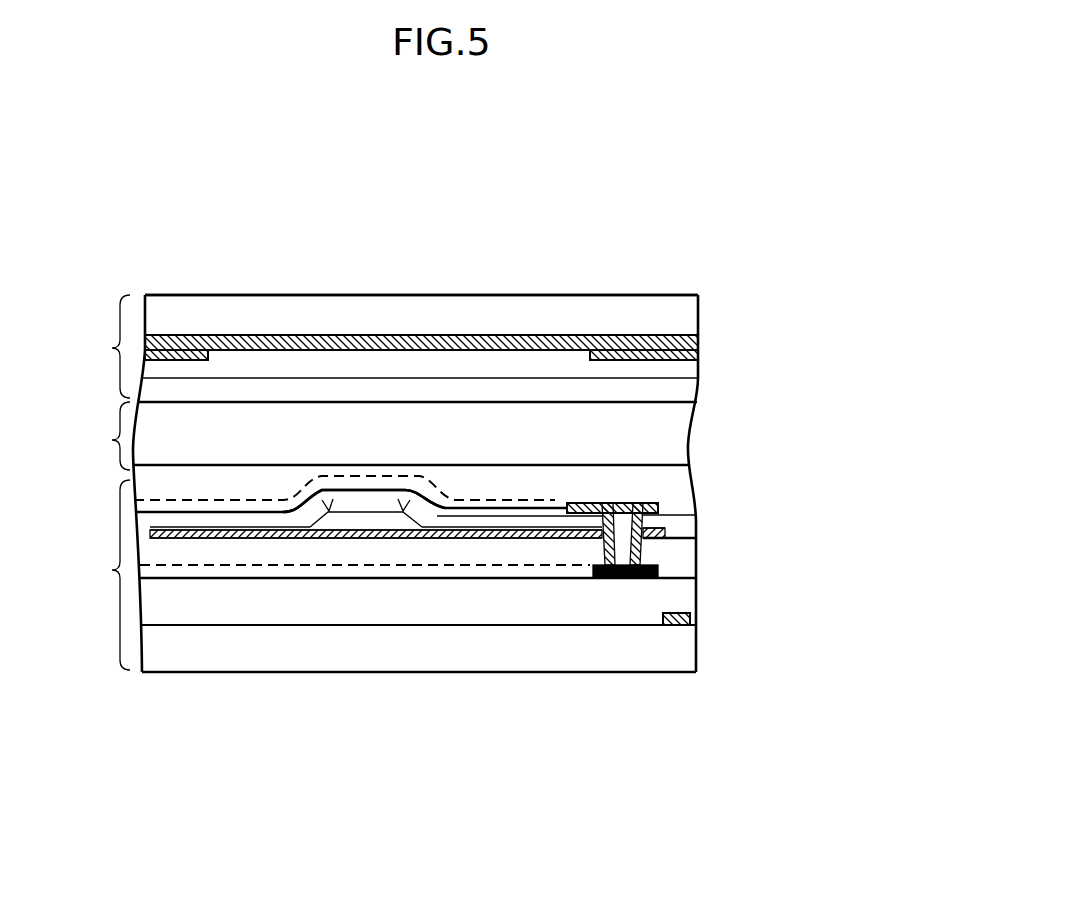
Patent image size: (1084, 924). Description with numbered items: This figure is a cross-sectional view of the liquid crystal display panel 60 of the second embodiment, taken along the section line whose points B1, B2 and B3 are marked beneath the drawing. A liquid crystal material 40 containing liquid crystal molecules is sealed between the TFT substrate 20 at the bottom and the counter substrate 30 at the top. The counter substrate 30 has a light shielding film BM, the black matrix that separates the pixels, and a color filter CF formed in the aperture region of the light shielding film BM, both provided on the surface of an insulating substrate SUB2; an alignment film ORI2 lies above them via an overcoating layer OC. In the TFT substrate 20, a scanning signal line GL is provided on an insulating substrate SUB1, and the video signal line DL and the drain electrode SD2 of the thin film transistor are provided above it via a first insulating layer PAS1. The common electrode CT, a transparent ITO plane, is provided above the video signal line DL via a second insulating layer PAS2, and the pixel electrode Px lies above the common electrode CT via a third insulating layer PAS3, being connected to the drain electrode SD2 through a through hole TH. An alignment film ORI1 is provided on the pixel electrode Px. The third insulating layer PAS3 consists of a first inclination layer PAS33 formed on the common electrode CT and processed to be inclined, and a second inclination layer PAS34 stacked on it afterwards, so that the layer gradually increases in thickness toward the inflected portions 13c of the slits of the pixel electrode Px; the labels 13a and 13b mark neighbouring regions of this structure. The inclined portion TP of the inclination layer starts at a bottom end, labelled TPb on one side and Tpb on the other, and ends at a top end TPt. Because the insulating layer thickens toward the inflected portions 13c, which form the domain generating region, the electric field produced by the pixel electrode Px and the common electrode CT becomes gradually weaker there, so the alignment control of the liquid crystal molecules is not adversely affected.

The liquid crystal display panel 60 is at (460, 130).
The counter substrate 30 is at (98, 346).
The liquid crystal material 40 is at (98, 436).
The TFT substrate 20 is at (99, 575).
The insulating substrate SUB2 is at (343, 302).
The color filter CF is at (468, 335).
The light shielding film BM is at (178, 342).
The overcoating layer OC is at (625, 368).
The alignment film ORI2 is at (628, 391).
The alignment film ORI1 is at (618, 490).
The touch detection electrode portion 13b is at (145, 498).
The touch detection electrode portion 13a is at (567, 502).
The inflected portion 13c is at (367, 494).
The third insulating layer PAS3 is at (808, 495).
The second inclination layer PAS34 is at (686, 522).
The first inclination layer PAS33 is at (615, 521).
The through hole TH is at (618, 542).
The pixel electrode Px is at (318, 520).
The inclined portion TP is at (298, 508).
The top end TPt is at (334, 506).
The common electrode CT is at (330, 538).
The scanning signal line GL is at (690, 627).
The second insulating layer PAS2 is at (667, 555).
The drain electrode SD2 is at (660, 577).
The video signal line DL is at (480, 570).
The first insulating layer PAS1 is at (617, 588).
The insulating substrate SUB1 is at (407, 658).
The bottom end TPb is at (288, 512).
The bottom end Tpb is at (430, 512).
The section line point B1 is at (142, 685).
The section line point B2 is at (384, 687).
The section line point B3 is at (702, 685).